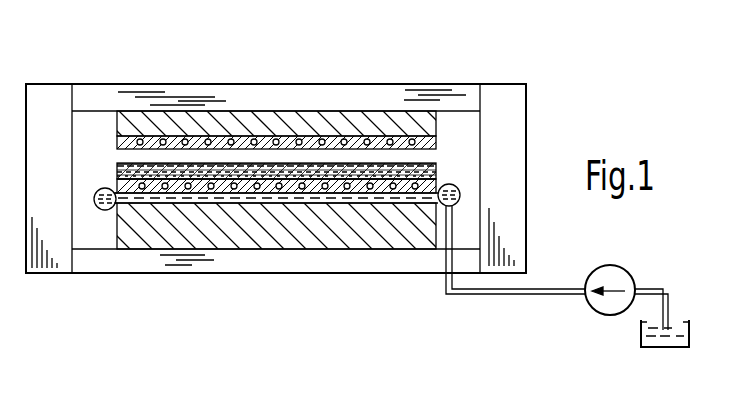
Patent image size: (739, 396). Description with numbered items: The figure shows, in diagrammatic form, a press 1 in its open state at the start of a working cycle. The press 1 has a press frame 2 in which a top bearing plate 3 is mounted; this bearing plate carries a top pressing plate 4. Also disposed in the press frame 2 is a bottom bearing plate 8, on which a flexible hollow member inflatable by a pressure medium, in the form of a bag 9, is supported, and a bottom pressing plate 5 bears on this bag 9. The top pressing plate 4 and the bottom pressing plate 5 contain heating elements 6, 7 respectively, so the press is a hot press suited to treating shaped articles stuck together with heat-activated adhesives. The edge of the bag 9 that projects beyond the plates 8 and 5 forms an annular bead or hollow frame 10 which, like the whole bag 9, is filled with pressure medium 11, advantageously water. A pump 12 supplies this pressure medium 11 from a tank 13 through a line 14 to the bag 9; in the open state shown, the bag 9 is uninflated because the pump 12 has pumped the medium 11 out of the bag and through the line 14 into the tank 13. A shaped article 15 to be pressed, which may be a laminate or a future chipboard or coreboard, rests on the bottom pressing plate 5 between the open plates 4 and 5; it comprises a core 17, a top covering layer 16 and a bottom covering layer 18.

The press 1 is at (527, 87).
The press frame 2 is at (288, 98).
The top bearing plate 3 is at (357, 124).
The top pressing plate 4 is at (437, 138).
The bottom pressing plate 5 is at (437, 178).
The heating element 6 is at (409, 140).
The heating element 7 is at (257, 188).
The bottom bearing plate 8 is at (230, 239).
The bag 9 is at (143, 203).
The hollow frame 10 is at (98, 210).
The pressure medium 11 is at (106, 211).
The pump 12 is at (608, 265).
The tank 13 is at (643, 337).
The line 14 is at (490, 292).
The shaped article 15 is at (117, 171).
The top covering layer 16 is at (106, 160).
The core 17 is at (117, 176).
The bottom covering layer 18 is at (117, 181).